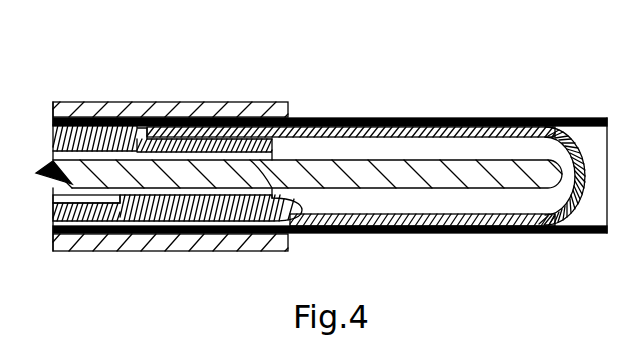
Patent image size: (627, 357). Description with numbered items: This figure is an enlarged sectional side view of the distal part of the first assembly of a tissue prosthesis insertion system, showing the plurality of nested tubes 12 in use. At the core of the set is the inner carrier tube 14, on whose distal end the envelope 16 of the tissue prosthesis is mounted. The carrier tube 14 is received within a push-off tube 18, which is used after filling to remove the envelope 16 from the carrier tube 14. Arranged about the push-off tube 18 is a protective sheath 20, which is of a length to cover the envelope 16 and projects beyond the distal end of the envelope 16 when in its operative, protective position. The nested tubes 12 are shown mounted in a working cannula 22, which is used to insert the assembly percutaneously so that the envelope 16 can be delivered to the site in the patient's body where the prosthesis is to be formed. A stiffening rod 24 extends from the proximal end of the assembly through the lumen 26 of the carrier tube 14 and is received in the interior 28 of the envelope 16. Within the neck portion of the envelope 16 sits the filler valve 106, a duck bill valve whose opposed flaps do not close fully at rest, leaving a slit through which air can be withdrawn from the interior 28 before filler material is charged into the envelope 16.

The nested tubes 12 is at (238, 90).
The carrier tube 14 is at (53, 150).
The envelope 16 is at (573, 119).
The push-off tube 18 is at (108, 117).
The protective sheath 20 is at (567, 234).
The working cannula 22 is at (184, 253).
The stiffening rod 24 is at (386, 136).
The lumen 26 is at (53, 199).
The interior 28 is at (411, 204).
The filler valve 106 is at (301, 214).